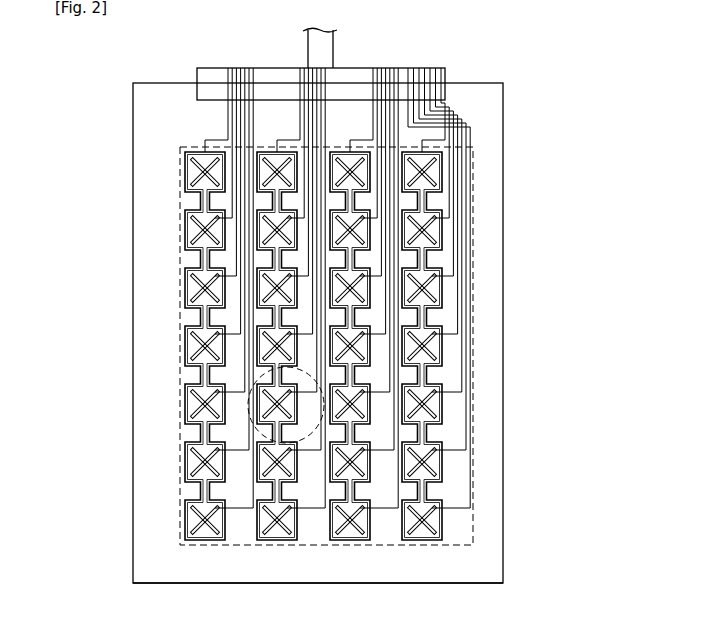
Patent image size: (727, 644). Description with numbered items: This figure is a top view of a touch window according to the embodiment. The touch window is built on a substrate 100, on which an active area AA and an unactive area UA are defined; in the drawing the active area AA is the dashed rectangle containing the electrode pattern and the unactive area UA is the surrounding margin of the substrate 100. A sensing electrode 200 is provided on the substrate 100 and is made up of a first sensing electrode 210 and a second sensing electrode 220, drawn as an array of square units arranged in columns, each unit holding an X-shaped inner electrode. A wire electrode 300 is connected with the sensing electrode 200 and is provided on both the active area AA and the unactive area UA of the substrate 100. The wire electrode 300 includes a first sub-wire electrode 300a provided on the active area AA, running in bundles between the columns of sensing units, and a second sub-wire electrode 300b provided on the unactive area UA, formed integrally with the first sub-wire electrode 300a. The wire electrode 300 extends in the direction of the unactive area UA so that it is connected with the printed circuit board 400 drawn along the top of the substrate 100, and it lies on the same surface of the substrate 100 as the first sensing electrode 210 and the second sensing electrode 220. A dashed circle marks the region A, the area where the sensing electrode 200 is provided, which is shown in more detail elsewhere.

The substrate 100 is at (505, 347).
The sensing electrode 200 is at (249, 346).
The first sensing electrode 210 is at (188, 178).
The second sensing electrode 220 is at (192, 158).
The wire electrode 300 is at (396, 288).
The first sub-wire electrode 300a is at (397, 203).
The second sub-wire electrode 300b is at (398, 128).
The printed circuit board 400 is at (333, 50).
The first area A is at (325, 405).
The active area AA is at (383, 437).
The unactive area UA is at (360, 570).